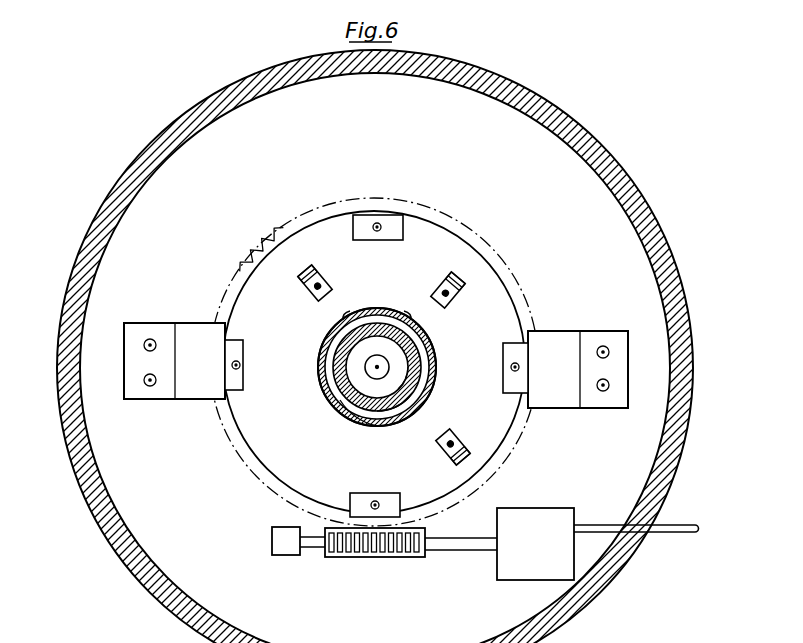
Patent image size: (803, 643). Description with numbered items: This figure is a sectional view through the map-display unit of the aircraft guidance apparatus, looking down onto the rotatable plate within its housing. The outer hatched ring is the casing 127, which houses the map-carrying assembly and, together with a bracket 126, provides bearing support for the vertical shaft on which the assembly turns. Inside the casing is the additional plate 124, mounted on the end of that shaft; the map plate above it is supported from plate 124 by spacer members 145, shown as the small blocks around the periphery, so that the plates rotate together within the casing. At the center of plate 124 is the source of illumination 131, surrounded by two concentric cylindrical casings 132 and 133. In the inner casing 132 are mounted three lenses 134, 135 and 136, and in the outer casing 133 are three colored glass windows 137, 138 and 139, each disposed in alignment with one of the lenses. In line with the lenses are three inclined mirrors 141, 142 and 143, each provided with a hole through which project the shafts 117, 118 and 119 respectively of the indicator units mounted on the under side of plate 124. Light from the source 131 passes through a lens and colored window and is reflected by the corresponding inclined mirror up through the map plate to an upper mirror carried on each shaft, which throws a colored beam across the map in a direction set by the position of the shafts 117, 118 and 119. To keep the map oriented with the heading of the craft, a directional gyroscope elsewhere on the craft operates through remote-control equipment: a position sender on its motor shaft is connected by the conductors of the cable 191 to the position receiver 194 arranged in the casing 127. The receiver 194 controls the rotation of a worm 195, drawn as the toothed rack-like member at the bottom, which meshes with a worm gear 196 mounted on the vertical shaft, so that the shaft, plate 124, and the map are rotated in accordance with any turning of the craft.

The casing 127 is at (181, 121).
The additional plate 124 is at (450, 240).
The worm gear 196 is at (260, 236).
The bracket 126 is at (173, 323).
The spacer members 145 is at (391, 236).
The shaft 119 is at (320, 282).
The inclined mirror 143 is at (308, 292).
The shaft 118 is at (446, 290).
The inclined mirror 142 is at (460, 292).
The shaft 117 is at (443, 450).
The inclined mirror 141 is at (463, 441).
The lens 136 is at (322, 341).
The lens 135 is at (420, 343).
The cylindrical casing 133 is at (355, 416).
The cylindrical casing 132 is at (340, 395).
The lens 134 is at (398, 414).
The colored glass window 137 is at (415, 396).
The source of illumination 131 is at (376, 364).
The colored glass window 139 is at (350, 311).
The colored glass window 138 is at (404, 311).
The worm 195 is at (390, 558).
The position receiver 194 is at (535, 544).
The cable 191 is at (692, 515).